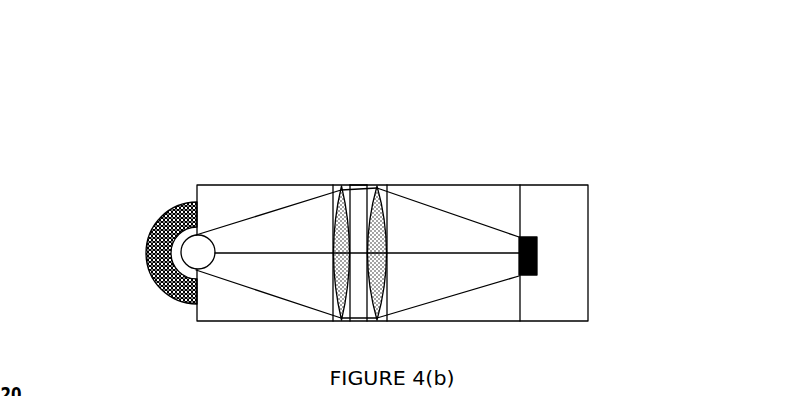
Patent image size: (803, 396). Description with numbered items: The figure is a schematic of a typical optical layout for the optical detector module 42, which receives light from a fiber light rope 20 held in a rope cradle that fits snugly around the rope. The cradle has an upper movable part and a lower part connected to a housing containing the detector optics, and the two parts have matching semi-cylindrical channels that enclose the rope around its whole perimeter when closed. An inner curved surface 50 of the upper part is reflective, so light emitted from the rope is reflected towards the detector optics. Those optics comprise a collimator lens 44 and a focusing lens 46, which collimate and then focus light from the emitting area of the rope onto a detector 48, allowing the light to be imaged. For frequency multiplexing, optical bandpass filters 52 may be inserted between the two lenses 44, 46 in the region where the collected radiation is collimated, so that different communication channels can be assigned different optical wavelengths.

The reflector housing 20 is at (190, 237).
The optical detector module 42 is at (465, 183).
The collimator lens 44 is at (340, 185).
The focusing lens 46 is at (380, 185).
The detector 48 is at (537, 245).
The inner curved surface 50 is at (172, 256).
The optical bandpass filters 52 is at (362, 185).